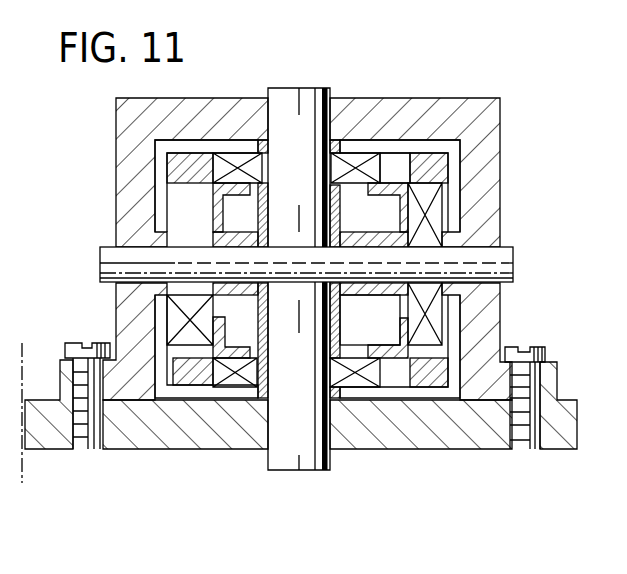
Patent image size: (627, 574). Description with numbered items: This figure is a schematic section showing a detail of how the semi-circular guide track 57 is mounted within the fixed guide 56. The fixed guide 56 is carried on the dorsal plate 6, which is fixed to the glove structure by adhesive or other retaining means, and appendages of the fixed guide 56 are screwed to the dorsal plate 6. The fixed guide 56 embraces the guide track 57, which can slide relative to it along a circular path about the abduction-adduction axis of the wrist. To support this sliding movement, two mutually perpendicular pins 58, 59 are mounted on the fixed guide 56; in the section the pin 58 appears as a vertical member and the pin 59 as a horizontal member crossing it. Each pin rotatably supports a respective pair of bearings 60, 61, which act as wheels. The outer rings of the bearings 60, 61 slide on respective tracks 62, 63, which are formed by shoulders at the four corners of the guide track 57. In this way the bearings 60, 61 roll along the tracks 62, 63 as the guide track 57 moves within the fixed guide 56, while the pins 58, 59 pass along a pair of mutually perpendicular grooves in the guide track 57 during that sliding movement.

The dorsal plate 6 is at (555, 427).
The fixed guide 56 is at (494, 93).
The guide track 57 is at (377, 313).
The pin 58 is at (306, 116).
The pin 59 is at (497, 268).
The bearings 60 is at (368, 167).
The bearings 61 is at (180, 322).
The track 62 is at (230, 170).
The track 63 is at (190, 186).